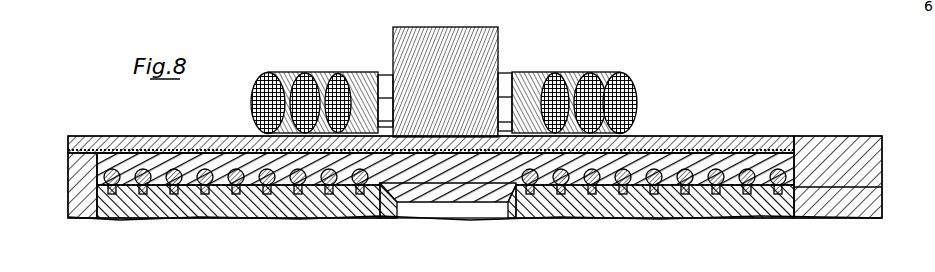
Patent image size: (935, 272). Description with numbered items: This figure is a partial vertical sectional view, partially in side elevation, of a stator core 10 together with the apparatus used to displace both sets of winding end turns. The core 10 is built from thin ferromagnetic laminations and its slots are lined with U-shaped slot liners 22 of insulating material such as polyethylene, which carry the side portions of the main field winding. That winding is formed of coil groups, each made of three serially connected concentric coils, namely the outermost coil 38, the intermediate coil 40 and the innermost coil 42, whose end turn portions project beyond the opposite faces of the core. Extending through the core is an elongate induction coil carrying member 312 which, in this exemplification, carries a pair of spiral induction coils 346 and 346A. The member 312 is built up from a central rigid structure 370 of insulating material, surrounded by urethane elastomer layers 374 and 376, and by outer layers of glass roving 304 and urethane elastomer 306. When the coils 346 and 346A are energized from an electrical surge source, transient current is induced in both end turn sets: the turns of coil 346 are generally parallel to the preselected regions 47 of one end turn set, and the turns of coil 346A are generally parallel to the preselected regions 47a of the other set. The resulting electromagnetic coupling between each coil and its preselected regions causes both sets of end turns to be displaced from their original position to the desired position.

The stator core 10 is at (503, 49).
The slot liner 22 is at (381, 71).
The preselected regions of second end turn set 47a is at (252, 101).
The preselected regions of first end turn set 47 is at (597, 76).
The innermost coil 42 is at (552, 72).
The intermediate coil 40 is at (588, 71).
The outermost coil 38 is at (618, 71).
The urethane elastomer outer layer 306 is at (657, 148).
The glass roving outer layer 304 is at (691, 160).
The central rigid structure 370 is at (882, 211).
The urethane elastomer layer 374 is at (882, 187).
The urethane elastomer layer 376 is at (784, 158).
The elongate induction coil carrying member 312 is at (827, 134).
The spiral induction coil 346 is at (748, 169).
The spiral induction coil 346A is at (143, 169).